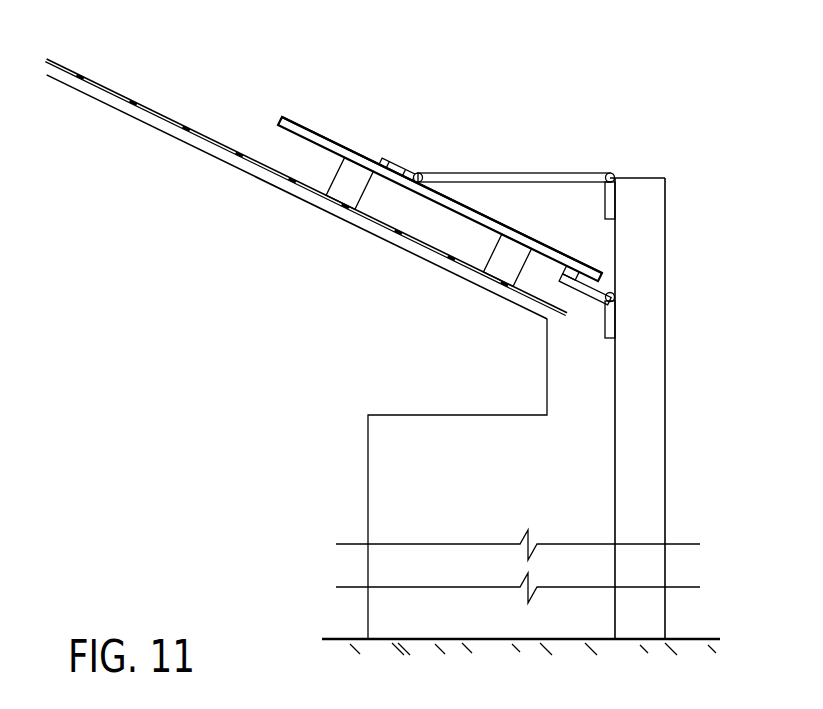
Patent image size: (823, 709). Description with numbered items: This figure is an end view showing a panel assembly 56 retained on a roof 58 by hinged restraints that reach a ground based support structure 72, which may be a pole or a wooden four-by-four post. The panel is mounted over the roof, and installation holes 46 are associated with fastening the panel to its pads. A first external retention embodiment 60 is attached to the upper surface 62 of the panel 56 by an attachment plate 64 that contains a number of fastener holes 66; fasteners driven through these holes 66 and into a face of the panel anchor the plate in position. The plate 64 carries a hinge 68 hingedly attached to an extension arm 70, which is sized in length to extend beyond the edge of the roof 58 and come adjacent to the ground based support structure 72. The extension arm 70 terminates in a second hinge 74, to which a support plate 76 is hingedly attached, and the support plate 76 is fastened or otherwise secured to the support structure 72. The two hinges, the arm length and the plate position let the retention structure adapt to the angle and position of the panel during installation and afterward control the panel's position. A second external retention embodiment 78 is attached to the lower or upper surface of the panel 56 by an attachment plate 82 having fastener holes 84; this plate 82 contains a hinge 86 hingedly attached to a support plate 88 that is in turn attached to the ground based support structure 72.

The installation holes 46 is at (475, 228).
The panel assembly 56 is at (298, 113).
The roof 58 is at (177, 121).
The first external retention embodiment 60 is at (517, 98).
The upper surface 62 is at (347, 148).
The attachment plate 64 is at (403, 162).
The fastener holes 66 is at (405, 182).
The hinge 68 is at (423, 174).
The extension arm 70 is at (573, 173).
The ground based support structure 72 is at (640, 465).
The second hinge 74 is at (614, 173).
The support plate 76 is at (610, 193).
The second external retention embodiment 78 is at (594, 337).
The attachment plate 82 is at (606, 284).
The fastener holes 84 is at (572, 284).
The hinge 86 is at (616, 297).
The support plate 88 is at (610, 318).